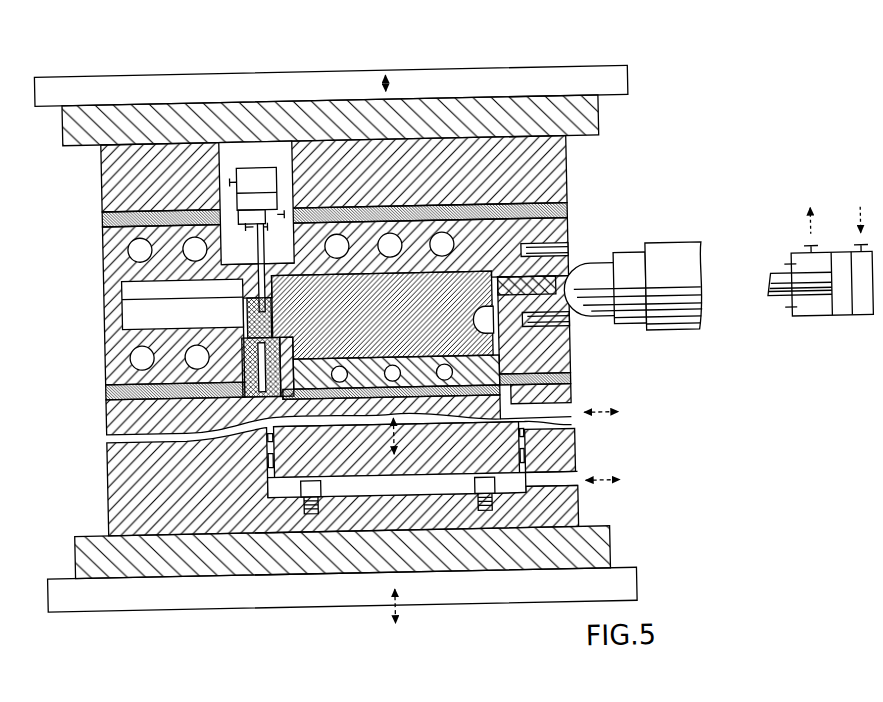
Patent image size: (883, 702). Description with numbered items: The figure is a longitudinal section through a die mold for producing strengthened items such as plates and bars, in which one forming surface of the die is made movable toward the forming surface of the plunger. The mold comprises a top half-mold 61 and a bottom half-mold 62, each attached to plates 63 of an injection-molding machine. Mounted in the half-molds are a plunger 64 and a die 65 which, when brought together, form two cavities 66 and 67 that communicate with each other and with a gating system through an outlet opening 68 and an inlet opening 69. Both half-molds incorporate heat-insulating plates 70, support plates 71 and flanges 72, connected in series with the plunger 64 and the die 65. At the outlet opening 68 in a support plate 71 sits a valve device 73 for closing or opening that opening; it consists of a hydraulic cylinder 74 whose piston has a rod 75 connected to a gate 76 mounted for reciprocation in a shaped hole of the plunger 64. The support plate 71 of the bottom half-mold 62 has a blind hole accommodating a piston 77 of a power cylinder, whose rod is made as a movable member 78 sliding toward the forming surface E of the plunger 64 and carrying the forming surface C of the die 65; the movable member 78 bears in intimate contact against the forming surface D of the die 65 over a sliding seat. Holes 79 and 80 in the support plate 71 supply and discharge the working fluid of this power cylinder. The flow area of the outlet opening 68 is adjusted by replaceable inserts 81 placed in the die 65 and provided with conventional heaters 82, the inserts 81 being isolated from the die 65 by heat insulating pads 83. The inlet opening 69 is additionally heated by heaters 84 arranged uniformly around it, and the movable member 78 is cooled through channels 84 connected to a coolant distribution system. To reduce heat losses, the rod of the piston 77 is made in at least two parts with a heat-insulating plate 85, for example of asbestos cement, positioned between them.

The top half-mold 61 is at (578, 165).
The bottom half-mold 62 is at (580, 521).
The plates 63 is at (525, 81).
The plunger 64 is at (131, 288).
The die 65 is at (104, 383).
The cavity 66 is at (573, 382).
The cavity 67 is at (120, 285).
The outlet opening 68 is at (275, 262).
The inlet opening 69 is at (467, 302).
The heat-insulating plates 70 is at (185, 430).
The support plates 71 is at (558, 451).
The flanges 72 is at (88, 550).
The valve device 73 is at (251, 160).
The hydraulic cylinder 74 is at (269, 174).
The rod 75 is at (259, 245).
The gate 76 is at (251, 298).
The piston 77 is at (503, 462).
The movable member 78 is at (355, 397).
The hole 79 is at (570, 487).
The hole 80 is at (568, 422).
The replaceable inserts 81 is at (243, 378).
The heaters 82 is at (263, 355).
The heat insulating pads 83 is at (265, 426).
The heaters 84 is at (571, 256).
The heat-insulating plate 85 is at (372, 397).
The forming surface of the die C is at (412, 352).
The forming surface of the die D is at (293, 425).
The forming surface of the plunger E is at (495, 326).